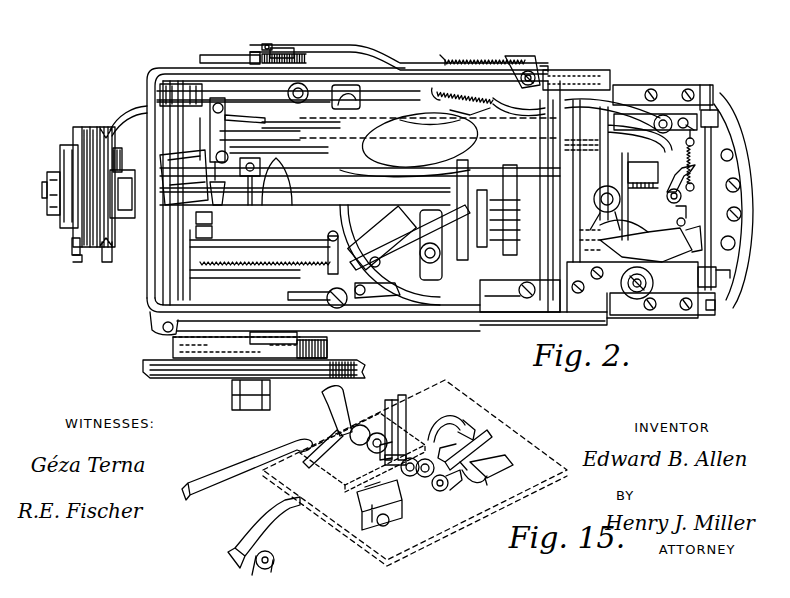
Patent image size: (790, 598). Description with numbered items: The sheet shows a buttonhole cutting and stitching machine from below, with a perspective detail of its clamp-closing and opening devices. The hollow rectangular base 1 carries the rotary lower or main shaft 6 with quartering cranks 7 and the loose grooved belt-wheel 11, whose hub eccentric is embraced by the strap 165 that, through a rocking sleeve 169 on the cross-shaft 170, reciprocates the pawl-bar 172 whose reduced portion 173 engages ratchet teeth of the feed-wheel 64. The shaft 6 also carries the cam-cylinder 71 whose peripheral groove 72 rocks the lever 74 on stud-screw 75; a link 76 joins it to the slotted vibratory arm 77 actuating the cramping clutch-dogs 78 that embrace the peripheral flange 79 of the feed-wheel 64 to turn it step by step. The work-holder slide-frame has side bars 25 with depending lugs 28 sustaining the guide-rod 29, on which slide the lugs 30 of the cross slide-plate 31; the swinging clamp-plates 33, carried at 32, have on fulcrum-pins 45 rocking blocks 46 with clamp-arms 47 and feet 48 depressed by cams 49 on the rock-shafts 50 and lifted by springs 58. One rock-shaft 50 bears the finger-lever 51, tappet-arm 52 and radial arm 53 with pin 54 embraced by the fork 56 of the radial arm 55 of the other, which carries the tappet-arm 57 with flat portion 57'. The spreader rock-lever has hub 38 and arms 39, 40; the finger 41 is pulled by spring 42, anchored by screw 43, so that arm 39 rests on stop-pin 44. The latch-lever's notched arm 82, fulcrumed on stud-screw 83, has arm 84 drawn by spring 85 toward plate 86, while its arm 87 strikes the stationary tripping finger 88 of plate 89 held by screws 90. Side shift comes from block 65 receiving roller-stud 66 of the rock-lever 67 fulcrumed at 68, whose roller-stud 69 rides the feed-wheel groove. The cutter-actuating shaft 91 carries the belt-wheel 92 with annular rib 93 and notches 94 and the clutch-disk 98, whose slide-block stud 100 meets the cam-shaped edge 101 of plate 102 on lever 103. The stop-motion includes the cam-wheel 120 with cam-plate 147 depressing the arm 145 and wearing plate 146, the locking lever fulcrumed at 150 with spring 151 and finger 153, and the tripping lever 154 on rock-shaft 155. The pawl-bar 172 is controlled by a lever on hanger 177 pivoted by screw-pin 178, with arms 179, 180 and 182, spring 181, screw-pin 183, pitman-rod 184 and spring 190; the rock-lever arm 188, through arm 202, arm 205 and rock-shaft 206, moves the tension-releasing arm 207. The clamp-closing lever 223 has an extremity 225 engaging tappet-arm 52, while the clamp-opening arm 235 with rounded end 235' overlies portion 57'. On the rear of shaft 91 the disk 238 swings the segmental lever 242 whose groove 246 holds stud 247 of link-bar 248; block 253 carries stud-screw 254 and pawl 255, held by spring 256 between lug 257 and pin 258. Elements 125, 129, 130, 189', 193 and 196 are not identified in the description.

In FIG. 2, the hollow rectangular base 1 is at (400, 72).
In FIG. 2, the rotary lower shaft 6 is at (360, 186).
In FIG. 2, the quartering cranks 7 is at (288, 170).
In FIG. 2, the loose grooved belt-wheel 11 is at (92, 125).
In FIG. 2, the side bars 25 is at (623, 85).
In FIG. 2, the apertured lugs 28 is at (710, 315).
In FIG. 2, the transverse guide-rod 29 is at (742, 136).
In FIG. 2, the apertured lugs 30 is at (720, 114).
In FIG. 2, the cross slide-plate 31 is at (618, 245).
In FIG. 2, the clamp-plate mountings 32 is at (741, 214).
In FIG. 15, the swinging clamp-plates 33 is at (530, 510).
In FIG. 2, the hub of rock-lever 38 is at (678, 197).
In FIG. 2, the spreader-arm 39 is at (617, 205).
In FIG. 2, the spreader-arm 40 is at (672, 168).
In FIG. 2, the lateral apertured finger 41 is at (694, 187).
In FIG. 2, the spring 42 is at (692, 146).
In FIG. 2, the screw 43 is at (686, 142).
In FIG. 2, the stop-pin 44 is at (683, 218).
In FIG. 15, the transverse fulcrum-pin 45 is at (390, 520).
In FIG. 15, the rocking block 46 is at (385, 500).
In FIG. 15, the clamp-arm 47 is at (480, 478).
In FIG. 15, the clamping foot 48 is at (505, 460).
In FIG. 15, the cam 49 is at (376, 433).
In FIG. 15, the rock-shaft 50 is at (360, 425).
In FIG. 15, the finger-lever 51 is at (330, 415).
In FIG. 15, the tappet-arm 52 is at (318, 445).
In FIG. 15, the radial arm 53 is at (390, 400).
In FIG. 15, the lateral pin 54 is at (418, 402).
In FIG. 15, the radial arm 55 is at (418, 432).
In FIG. 15, the fork 56 is at (403, 398).
In FIG. 15, the lateral tappet-arm 57 is at (470, 448).
In FIG. 15, the flat operative portion 57' is at (476, 423).
In FIG. 15, the lifting springs 58 is at (455, 487).
In FIG. 2, the feed-wheel 64 is at (410, 141).
In FIG. 2, the block 65 is at (687, 88).
In FIG. 2, the roller-stud 66 is at (651, 88).
In FIG. 2, the rock-lever 67 is at (635, 108).
In FIG. 2, the fulcrum 68 is at (520, 130).
In FIG. 2, the roller-stud 69 is at (420, 122).
In FIG. 2, the cam-cylinder 71 is at (478, 195).
In FIG. 2, the peripheral groove 72 is at (553, 180).
In FIG. 2, the lever 74 is at (535, 288).
In FIG. 2, the stud-screw 75 is at (535, 298).
In FIG. 2, the link 76 is at (440, 250).
In FIG. 2, the slotted vibratory arm 77 is at (400, 268).
In FIG. 2, the cramping clutch-dogs 78 is at (382, 238).
In FIG. 2, the peripheral flange 79 is at (352, 232).
In FIG. 2, the notched detaining arm 82 is at (640, 228).
In FIG. 2, the stud-screw 83 is at (690, 240).
In FIG. 2, the second arm 84 is at (726, 212).
In FIG. 2, the spring 85 is at (736, 243).
In FIG. 2, the plate 86 is at (720, 278).
In FIG. 2, the third lateral arm 87 is at (660, 255).
In FIG. 2, the stationary tripping finger 88 is at (653, 282).
In FIG. 2, the plate 89 is at (585, 295).
In FIG. 2, the screws 90 is at (590, 273).
In FIG. 2, the cutter-actuating shaft 91 is at (243, 168).
In FIG. 2, the loose grooved belt-wheel 92 is at (145, 362).
In FIG. 2, the annular rib 93 is at (327, 362).
In FIG. 2, the notches 94 is at (245, 344).
In FIG. 2, the clutch-disk 98 is at (327, 346).
In FIG. 2, the stud 100 is at (165, 333).
In FIG. 2, the cam-shaped edge 101 is at (130, 190).
In FIG. 2, the plate 102 is at (345, 328).
In FIG. 2, the lever 103 is at (285, 332).
In FIG. 2, the cam-wheel 120 is at (250, 141).
In FIG. 2, the bar 125 is at (272, 152).
In FIG. 2, the block 129 is at (638, 165).
In FIG. 2, the end cap 130 is at (48, 174).
In FIG. 2, the rigid arm 145 is at (125, 120).
In FIG. 2, the wearing plate 146 is at (208, 130).
In FIG. 2, the cam-plate 147 is at (278, 124).
In FIG. 2, the fulcrum 150 is at (208, 150).
In FIG. 2, the spring 151 is at (208, 112).
In FIG. 2, the lateral finger 153 is at (165, 92).
In FIG. 2, the tripping lever 154 is at (230, 86).
In FIG. 2, the rock-shaft 155 is at (305, 92).
In FIG. 2, the strap 165 is at (125, 180).
In FIG. 2, the rocking sleeve 169 is at (190, 268).
In FIG. 2, the cross-shaft 170 is at (212, 160).
In FIG. 2, the pawl-bar 172 is at (255, 278).
In FIG. 2, the reduced operative portion 173 is at (410, 300).
In FIG. 2, the hanger 177 is at (355, 278).
In FIG. 2, the screw-pin 178 is at (365, 288).
In FIG. 2, the arm 179 is at (300, 290).
In FIG. 2, the arm 180 is at (370, 297).
In FIG. 2, the spring 181 is at (292, 300).
In FIG. 2, the third arm 182 is at (328, 265).
In FIG. 2, the screw-pin 183 is at (327, 240).
In FIG. 2, the pitman-rod 184 is at (215, 260).
In FIG. 2, the forwardly extending arm 188 is at (208, 230).
In FIG. 2, the shaft 189' is at (89, 260).
In FIG. 2, the spring 190 is at (230, 268).
In FIG. 2, the collar 193 is at (72, 245).
In FIG. 2, the pin 196 is at (73, 258).
In FIG. 2, the rigid lateral arm 202 is at (210, 214).
In FIG. 2, the lateral arm 205 is at (245, 118).
In FIG. 2, the rock-shaft 206 is at (360, 100).
In FIG. 2, the tension-releasing arm 207 is at (596, 150).
In FIG. 15, the clamp-closing lever 223 is at (205, 483).
In FIG. 15, the down-turned forward extremity 225 is at (300, 440).
In FIG. 15, the forwardly extending arm 235 is at (264, 528).
In FIG. 15, the downturned rounded extremity 235' is at (451, 419).
In FIG. 2, the disk 238 is at (210, 56).
In FIG. 2, the swinging segmental lever 242 is at (255, 53).
In FIG. 2, the undercut groove 246 is at (285, 48).
In FIG. 2, the stud 247 is at (268, 45).
In FIG. 2, the link-bar 248 is at (368, 46).
In FIG. 2, the block 253 is at (556, 78).
In FIG. 2, the stud-screw 254 is at (545, 70).
In FIG. 2, the pawl 255 is at (470, 58).
In FIG. 2, the spring 256 is at (510, 57).
In FIG. 2, the apertured lateral lug 257 is at (530, 64).
In FIG. 2, the pin 258 is at (447, 57).